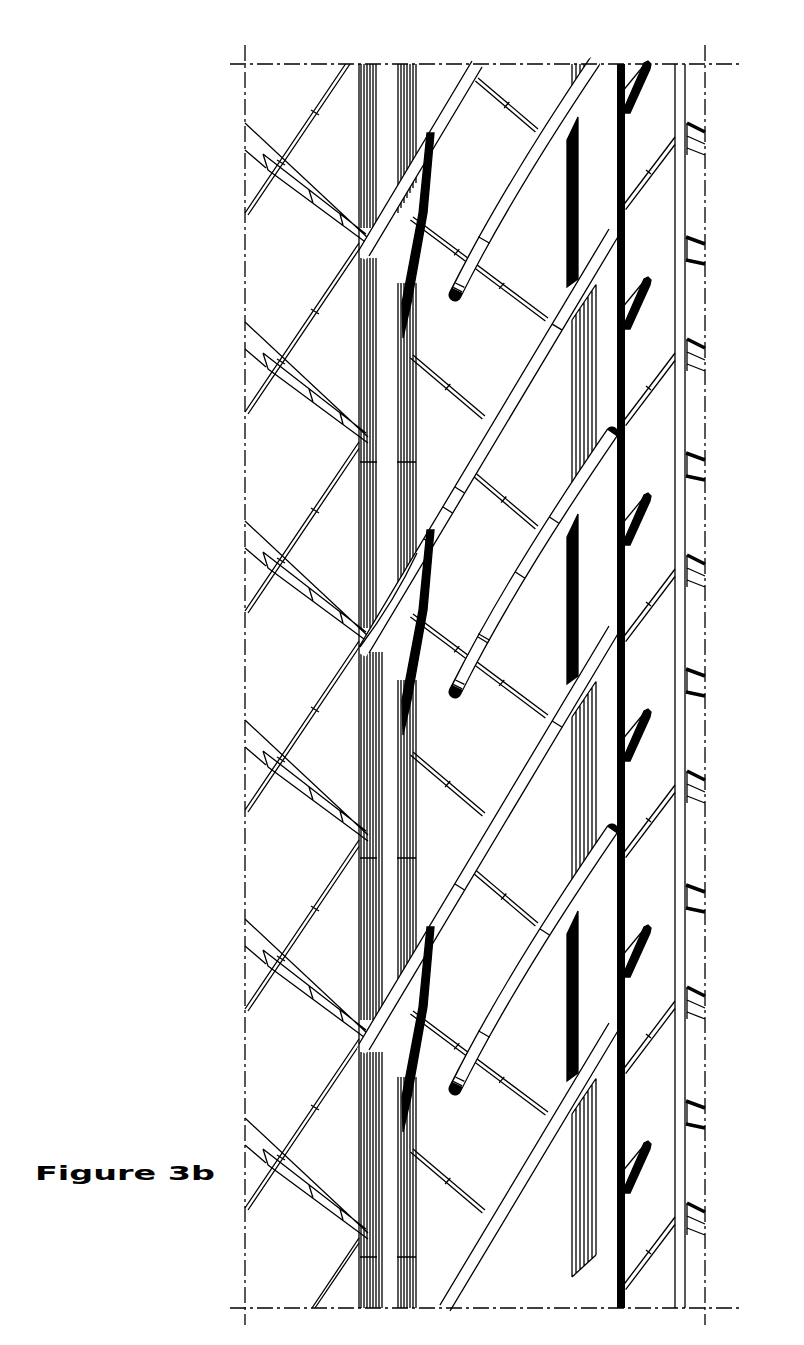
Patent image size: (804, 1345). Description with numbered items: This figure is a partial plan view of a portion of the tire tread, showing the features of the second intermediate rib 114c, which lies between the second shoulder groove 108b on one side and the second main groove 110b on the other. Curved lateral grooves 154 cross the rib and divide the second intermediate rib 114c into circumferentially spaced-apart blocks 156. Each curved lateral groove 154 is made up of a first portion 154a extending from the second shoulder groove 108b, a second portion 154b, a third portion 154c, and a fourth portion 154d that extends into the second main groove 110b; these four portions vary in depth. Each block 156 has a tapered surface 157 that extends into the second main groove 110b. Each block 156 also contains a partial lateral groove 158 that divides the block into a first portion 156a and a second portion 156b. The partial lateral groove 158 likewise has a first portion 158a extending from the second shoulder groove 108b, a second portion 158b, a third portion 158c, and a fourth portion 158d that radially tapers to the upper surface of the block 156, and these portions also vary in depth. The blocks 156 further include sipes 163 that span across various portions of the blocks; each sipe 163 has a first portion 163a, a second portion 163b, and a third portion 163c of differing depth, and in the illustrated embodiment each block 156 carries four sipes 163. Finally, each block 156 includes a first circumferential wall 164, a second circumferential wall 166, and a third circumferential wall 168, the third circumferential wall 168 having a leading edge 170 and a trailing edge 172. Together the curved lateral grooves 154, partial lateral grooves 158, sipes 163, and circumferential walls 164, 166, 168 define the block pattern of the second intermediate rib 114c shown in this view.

The second shoulder groove 108b is at (608, 83).
The second main groove 110b is at (390, 83).
The second intermediate rib 114c is at (517, 90).
The curved lateral groove 154 is at (525, 358).
The first portion of curved lateral groove 154a is at (567, 303).
The second portion of curved lateral groove 154b is at (528, 430).
The third portion of curved lateral groove 154c is at (453, 490).
The fourth portion of curved lateral groove 154d is at (380, 653).
The block 156 is at (495, 771).
The first portion of block 156a is at (500, 575).
The second portion of block 156b is at (560, 663).
The tapered surface 157 is at (427, 917).
The partial lateral groove 158 is at (533, 557).
The first portion of partial lateral groove 158a is at (563, 520).
The second portion of partial lateral groove 158b is at (520, 575).
The third portion of partial lateral groove 158c is at (483, 650).
The fourth portion of partial lateral groove 158d is at (450, 700).
The sipe 163 is at (488, 106).
The first portion of sipe 163a is at (533, 932).
The second portion of sipe 163b is at (497, 908).
The third portion of sipe 163c is at (470, 887).
The first circumferential wall 164 is at (577, 420).
The second circumferential wall 166 is at (573, 610).
The third circumferential wall 168 is at (447, 510).
The leading edge 170 is at (438, 542).
The trailing edge 172 is at (397, 1007).